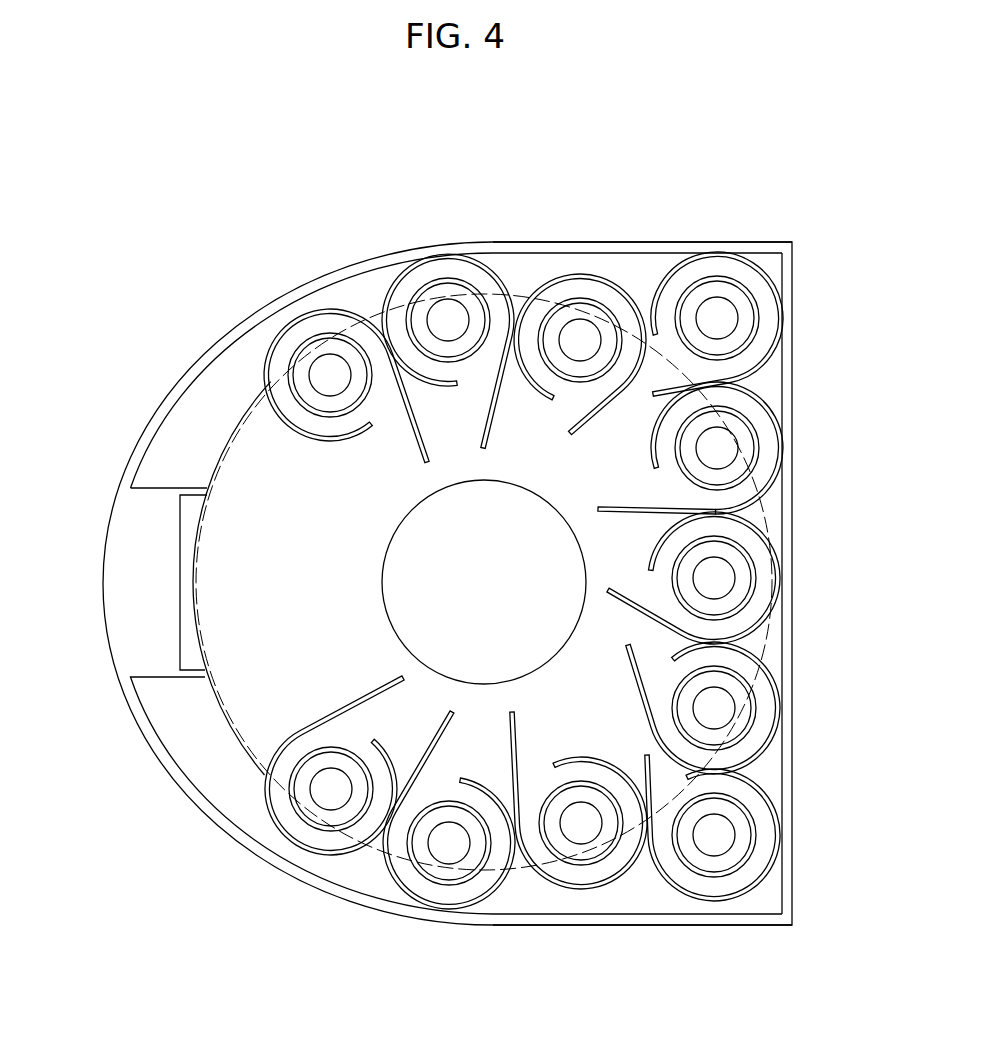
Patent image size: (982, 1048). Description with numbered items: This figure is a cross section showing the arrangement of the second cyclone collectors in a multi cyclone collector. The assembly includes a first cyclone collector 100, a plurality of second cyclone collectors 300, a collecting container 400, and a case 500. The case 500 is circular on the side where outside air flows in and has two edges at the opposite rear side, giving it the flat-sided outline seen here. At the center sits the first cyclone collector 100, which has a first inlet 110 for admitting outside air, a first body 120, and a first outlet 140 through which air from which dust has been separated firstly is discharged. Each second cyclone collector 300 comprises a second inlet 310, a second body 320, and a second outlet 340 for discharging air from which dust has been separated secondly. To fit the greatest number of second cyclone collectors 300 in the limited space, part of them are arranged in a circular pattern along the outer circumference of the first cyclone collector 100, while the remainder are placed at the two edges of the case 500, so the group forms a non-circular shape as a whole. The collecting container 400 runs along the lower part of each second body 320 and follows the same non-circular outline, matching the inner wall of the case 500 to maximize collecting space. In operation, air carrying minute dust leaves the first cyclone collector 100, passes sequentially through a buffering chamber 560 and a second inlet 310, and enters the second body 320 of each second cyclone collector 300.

The first cyclone collector 100 is at (246, 751).
The first inlet 110 is at (192, 640).
The first body 120 is at (220, 715).
The first outlet 140 is at (397, 593).
The second cyclone collector 300 is at (749, 265).
The second inlet 310 is at (672, 492).
The second body 320 is at (765, 406).
The second outlet 340 is at (757, 448).
The collecting container 400 is at (630, 253).
The case 500 is at (612, 927).
The buffering chamber 560 is at (252, 468).